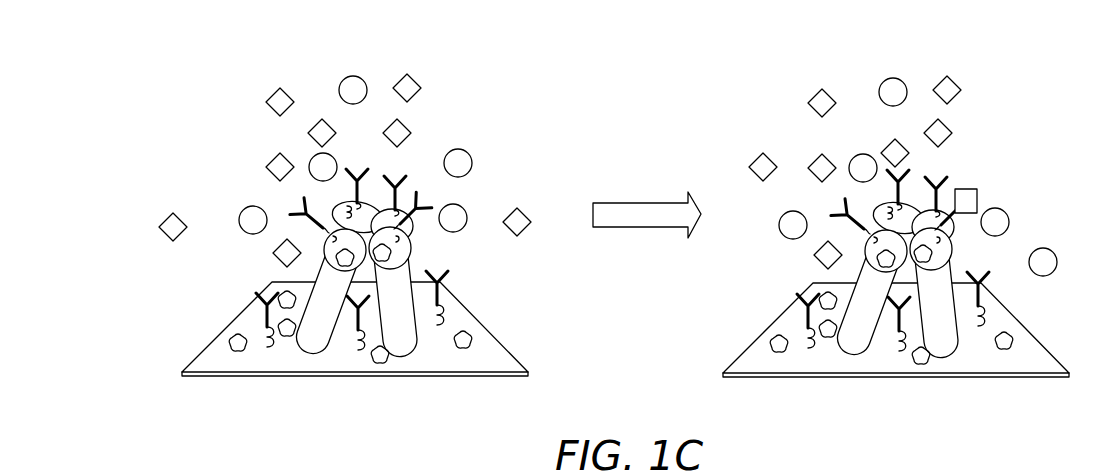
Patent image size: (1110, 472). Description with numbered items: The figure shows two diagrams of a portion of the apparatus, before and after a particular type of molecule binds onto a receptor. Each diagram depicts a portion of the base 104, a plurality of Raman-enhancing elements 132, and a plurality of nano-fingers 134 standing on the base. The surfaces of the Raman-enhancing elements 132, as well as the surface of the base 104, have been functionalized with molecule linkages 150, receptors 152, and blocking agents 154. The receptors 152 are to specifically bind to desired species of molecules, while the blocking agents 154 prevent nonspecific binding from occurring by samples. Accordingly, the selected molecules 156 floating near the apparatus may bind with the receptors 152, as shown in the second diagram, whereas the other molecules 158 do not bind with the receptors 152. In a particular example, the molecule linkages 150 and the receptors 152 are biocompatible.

The base 104 is at (298, 378).
The Raman-enhancing elements 132 is at (561, 299).
The nano-fingers 134 is at (332, 330).
The molecule linkages 150 is at (267, 343).
The receptors 152 is at (571, 350).
The blocking agents 154 is at (392, 358).
The selected molecules 156 is at (417, 80).
The other molecules 158 is at (342, 83).